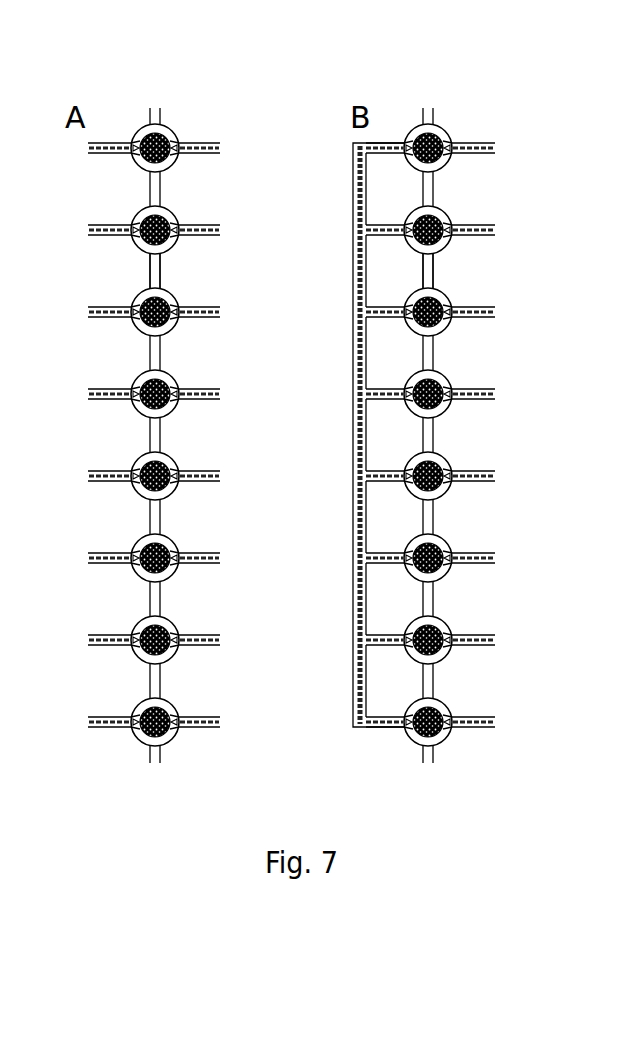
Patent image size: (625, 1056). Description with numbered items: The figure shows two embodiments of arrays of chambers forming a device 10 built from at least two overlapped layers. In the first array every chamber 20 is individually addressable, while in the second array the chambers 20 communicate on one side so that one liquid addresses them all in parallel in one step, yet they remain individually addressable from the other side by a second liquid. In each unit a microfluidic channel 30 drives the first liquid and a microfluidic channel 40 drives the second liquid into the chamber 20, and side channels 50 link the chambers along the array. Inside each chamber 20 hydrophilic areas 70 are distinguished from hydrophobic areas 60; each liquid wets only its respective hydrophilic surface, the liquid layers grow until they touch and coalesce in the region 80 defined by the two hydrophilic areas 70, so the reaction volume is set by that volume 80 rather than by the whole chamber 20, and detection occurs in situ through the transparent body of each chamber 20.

In FIG. 7A, the device 10 is at (181, 88).
In FIG. 7B, the device 10 is at (424, 83).
In FIG. 7A, the chamber 20 is at (177, 297).
In FIG. 7B, the chamber 20 is at (448, 297).
In FIG. 7A, the microfluidic channel 30 is at (97, 310).
In FIG. 7B, the microfluidic channel 30 is at (353, 350).
In FIG. 7A, the microfluidic channel 40 is at (218, 309).
In FIG. 7B, the microfluidic channel 40 is at (488, 310).
In FIG. 7A, the side channel 50 is at (150, 273).
In FIG. 7B, the side channel 50 is at (425, 273).
In FIG. 7A, the hydrophobic area 60 is at (147, 332).
In FIG. 7B, the hydrophobic area 60 is at (418, 330).
In FIG. 7A, the hydrophilic area 70 is at (97, 316).
In FIG. 7B, the hydrophilic area 70 is at (362, 312).
In FIG. 7A, the region 80 is at (163, 327).
In FIG. 7B, the region 80 is at (438, 327).